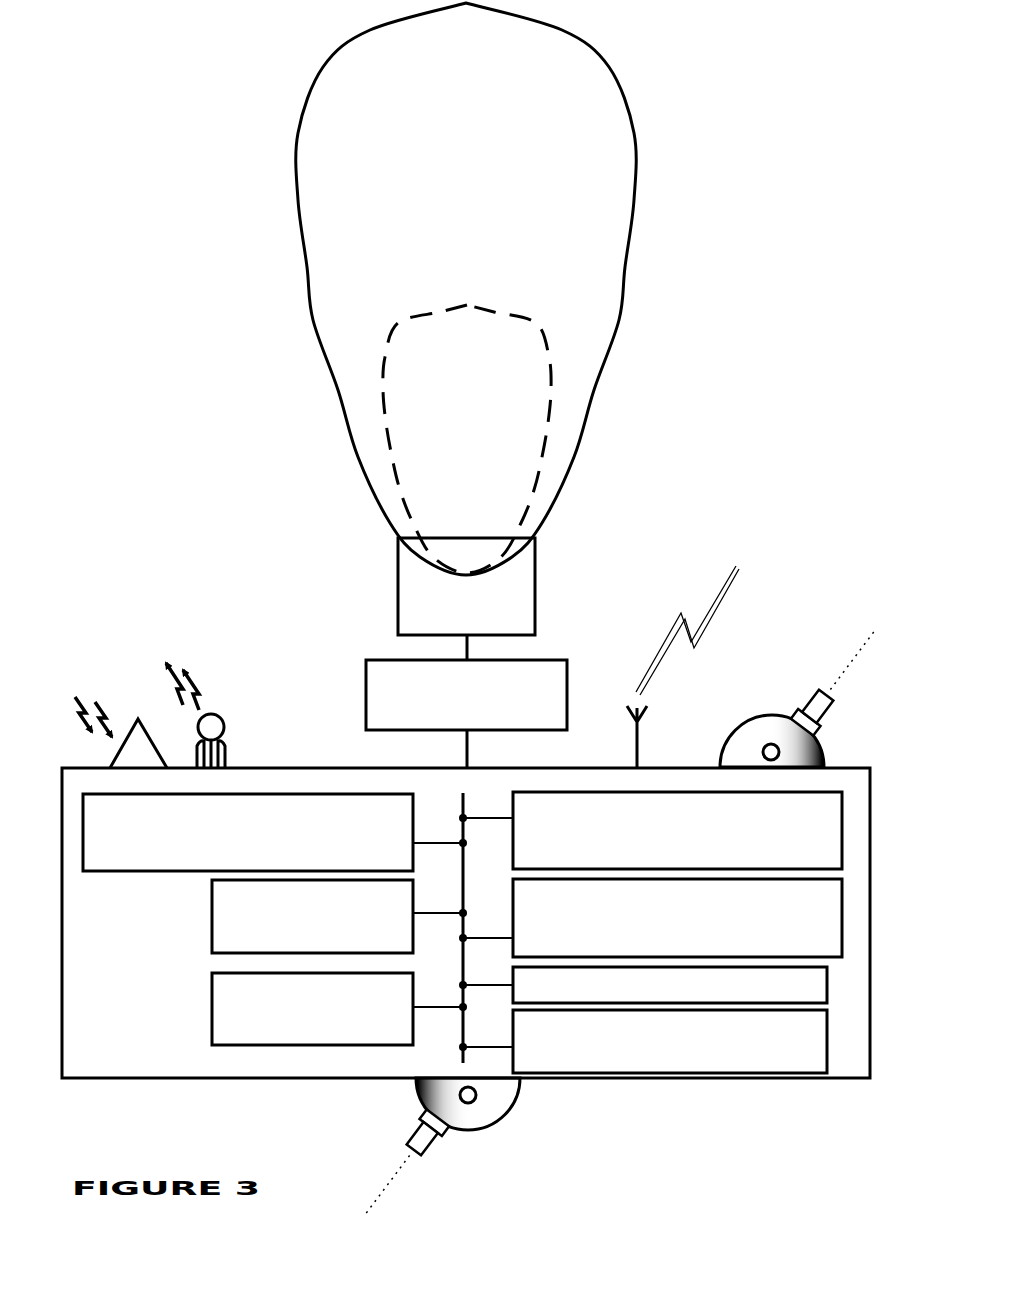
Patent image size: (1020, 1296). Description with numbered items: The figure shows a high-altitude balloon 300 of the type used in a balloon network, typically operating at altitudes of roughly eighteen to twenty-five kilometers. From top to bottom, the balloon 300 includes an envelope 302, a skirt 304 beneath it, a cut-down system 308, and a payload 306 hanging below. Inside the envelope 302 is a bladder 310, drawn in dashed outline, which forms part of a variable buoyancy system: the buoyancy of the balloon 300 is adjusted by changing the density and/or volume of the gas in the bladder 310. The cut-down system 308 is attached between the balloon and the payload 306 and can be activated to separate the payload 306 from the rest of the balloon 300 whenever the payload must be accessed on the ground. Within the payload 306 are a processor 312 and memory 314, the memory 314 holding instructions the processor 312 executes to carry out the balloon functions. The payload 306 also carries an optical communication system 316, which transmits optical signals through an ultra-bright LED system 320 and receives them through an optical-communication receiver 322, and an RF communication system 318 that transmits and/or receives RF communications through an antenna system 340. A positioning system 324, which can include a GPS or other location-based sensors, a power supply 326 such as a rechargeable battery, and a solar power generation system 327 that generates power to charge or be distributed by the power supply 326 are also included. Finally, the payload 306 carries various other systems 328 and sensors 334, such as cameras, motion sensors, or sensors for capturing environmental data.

The high-altitude balloon 300 is at (280, 68).
The envelope 302 is at (482, 97).
The skirt 304 is at (487, 627).
The payload 306 is at (207, 1069).
The cut-down system 308 is at (485, 719).
The bladder 310 is at (483, 444).
The processor 312 is at (332, 1032).
The memory 314 is at (332, 941).
The optical communication system 316 is at (308, 856).
The RF communication system 318 is at (697, 855).
The ultra-bright LED system 320 is at (225, 728).
The optical-communication receiver 322 is at (135, 718).
The positioning system 324 is at (802, 931).
The power supply 326 is at (768, 996).
The solar power generation system 327 is at (730, 1066).
The other systems 328 is at (749, 717).
The sensors 334 is at (508, 1113).
The antenna system 340 is at (639, 746).